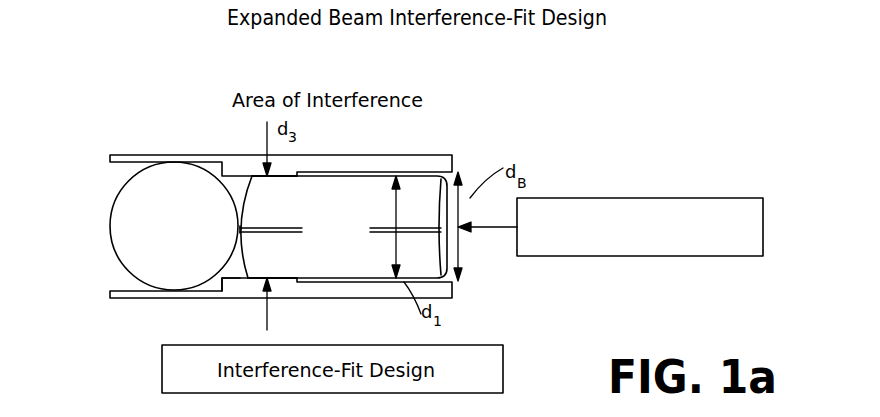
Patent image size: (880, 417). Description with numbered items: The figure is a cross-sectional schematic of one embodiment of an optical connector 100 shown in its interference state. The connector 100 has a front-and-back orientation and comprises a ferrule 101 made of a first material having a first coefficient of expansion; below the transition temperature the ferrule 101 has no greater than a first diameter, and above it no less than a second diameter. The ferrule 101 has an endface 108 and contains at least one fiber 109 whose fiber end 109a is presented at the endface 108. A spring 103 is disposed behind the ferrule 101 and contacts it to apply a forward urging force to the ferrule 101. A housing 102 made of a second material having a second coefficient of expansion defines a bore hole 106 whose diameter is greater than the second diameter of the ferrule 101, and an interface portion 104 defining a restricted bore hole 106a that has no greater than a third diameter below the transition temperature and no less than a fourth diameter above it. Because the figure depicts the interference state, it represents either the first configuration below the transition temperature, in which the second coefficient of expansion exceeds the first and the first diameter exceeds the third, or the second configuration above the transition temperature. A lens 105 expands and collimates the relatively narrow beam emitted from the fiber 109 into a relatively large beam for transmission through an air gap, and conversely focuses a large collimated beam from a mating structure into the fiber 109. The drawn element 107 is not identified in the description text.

The optical connector 100 is at (507, 138).
The ferrule 101 is at (420, 190).
The housing 102 is at (123, 157).
The spring 103 is at (645, 197).
The interface portion 104 is at (252, 177).
The lens 105 is at (120, 230).
The bore hole 106 is at (442, 237).
The restricted bore hole 106a is at (275, 202).
The housing shoulder 107 is at (210, 288).
The endface 108 is at (240, 226).
The fiber 109 is at (248, 278).
The fiber end 109a is at (238, 230).